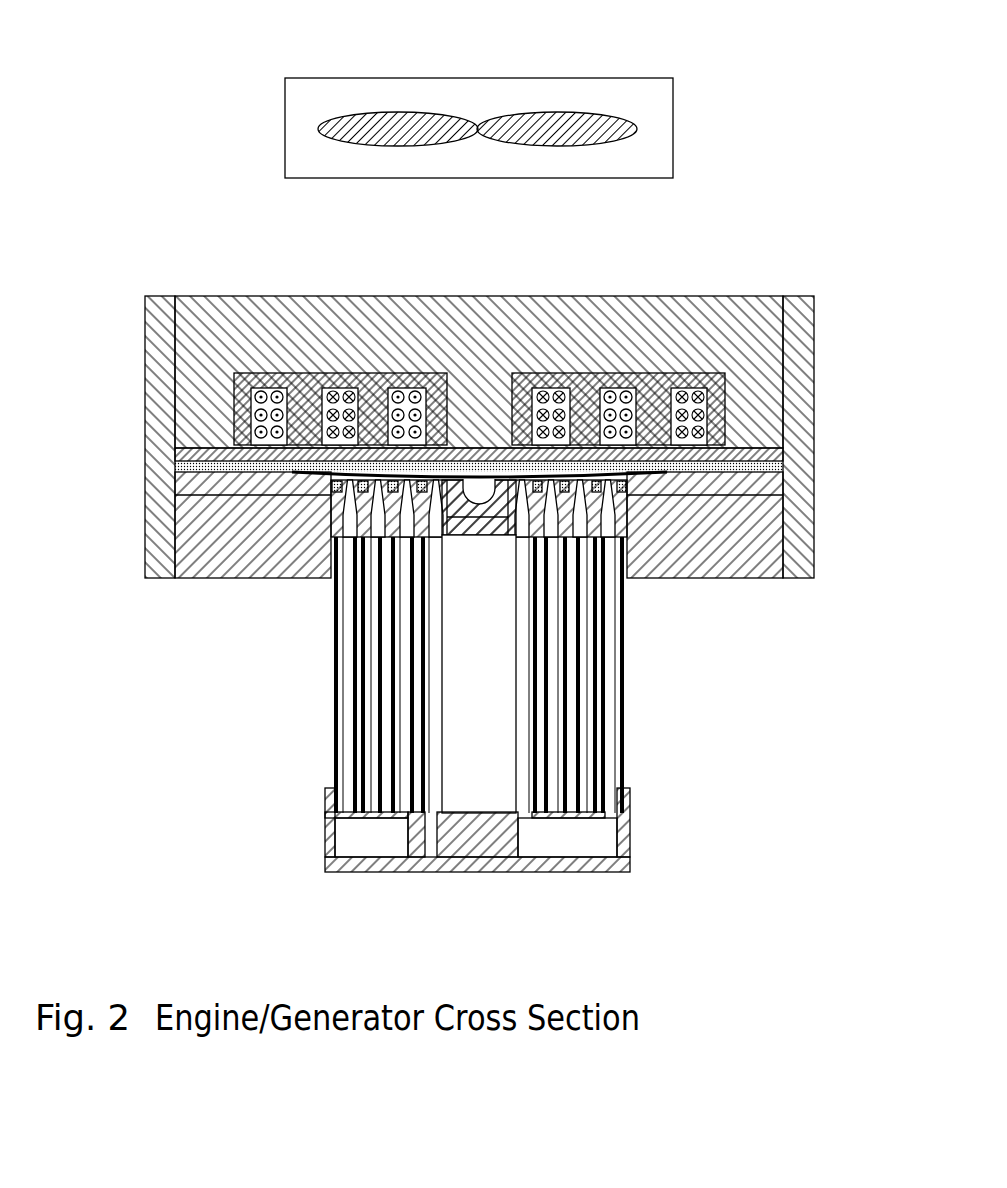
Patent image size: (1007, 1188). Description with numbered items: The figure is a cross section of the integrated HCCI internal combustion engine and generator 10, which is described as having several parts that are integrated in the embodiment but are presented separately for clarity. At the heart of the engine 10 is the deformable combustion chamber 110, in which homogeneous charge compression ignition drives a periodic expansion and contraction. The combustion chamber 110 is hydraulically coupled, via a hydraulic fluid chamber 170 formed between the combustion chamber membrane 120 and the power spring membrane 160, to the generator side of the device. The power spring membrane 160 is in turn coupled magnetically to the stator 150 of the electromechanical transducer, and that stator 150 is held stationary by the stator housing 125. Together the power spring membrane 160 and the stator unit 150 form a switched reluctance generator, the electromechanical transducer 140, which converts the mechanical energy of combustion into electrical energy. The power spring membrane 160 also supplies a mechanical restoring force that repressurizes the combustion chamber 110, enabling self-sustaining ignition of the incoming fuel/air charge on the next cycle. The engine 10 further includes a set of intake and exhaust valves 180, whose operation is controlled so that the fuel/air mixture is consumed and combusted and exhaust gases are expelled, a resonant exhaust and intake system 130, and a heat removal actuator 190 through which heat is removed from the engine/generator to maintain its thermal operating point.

The engine 10 is at (610, 296).
The deformable combustion chamber 110 is at (350, 532).
The combustion chamber membrane 120 is at (298, 475).
The stator housing 125 is at (325, 330).
The resonant exhaust and intake system 130 is at (622, 723).
The electromechanical transducer 140 is at (262, 380).
The stator 150 is at (307, 390).
The power spring membrane 160 is at (250, 434).
The hydraulic fluid chamber 170 is at (290, 468).
The intake and exhaust valves 180 is at (620, 472).
The heat removal actuator 190 is at (317, 78).